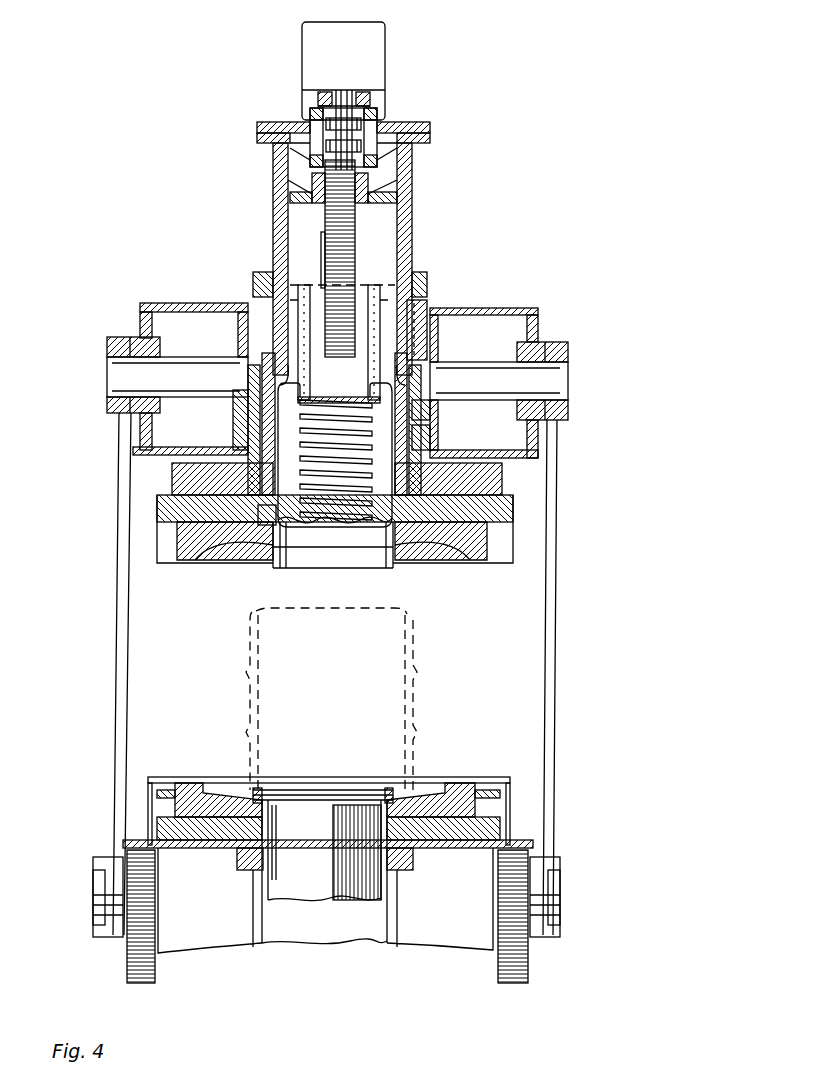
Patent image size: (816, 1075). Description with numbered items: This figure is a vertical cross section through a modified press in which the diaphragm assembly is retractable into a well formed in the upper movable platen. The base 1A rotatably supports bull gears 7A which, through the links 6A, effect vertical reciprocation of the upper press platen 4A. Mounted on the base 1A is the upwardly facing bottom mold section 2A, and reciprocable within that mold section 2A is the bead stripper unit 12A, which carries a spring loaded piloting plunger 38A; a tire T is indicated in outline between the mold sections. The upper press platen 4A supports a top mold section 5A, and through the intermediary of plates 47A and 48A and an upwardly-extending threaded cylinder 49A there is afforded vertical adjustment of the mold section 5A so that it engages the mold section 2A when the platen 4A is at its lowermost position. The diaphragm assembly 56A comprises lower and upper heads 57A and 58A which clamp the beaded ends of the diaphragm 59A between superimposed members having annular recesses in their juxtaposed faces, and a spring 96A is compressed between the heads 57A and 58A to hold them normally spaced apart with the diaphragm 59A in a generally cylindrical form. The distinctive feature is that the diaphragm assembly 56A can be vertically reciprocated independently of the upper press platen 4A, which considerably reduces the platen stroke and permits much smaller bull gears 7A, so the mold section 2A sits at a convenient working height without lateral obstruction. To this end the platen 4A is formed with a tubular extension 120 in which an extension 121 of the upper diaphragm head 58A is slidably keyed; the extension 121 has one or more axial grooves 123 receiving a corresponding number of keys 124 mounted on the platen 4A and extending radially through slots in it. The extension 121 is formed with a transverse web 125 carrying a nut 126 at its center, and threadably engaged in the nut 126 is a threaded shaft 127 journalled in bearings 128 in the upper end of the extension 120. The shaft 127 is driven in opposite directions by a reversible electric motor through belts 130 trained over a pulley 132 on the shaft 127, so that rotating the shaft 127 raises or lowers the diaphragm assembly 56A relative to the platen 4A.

The pulley 132 is at (347, 95).
The belts 130 is at (362, 102).
The bearings 128 is at (312, 156).
The transverse web 125 is at (388, 195).
The nut 126 is at (363, 222).
The threaded shaft 127 is at (326, 262).
The tubular extension 120 is at (412, 235).
The extension 121 is at (407, 265).
The axial grooves 123 is at (400, 313).
The keys 124 is at (418, 336).
The upper press platen 4A is at (540, 325).
The upper head 58A is at (245, 434).
The diaphragm 59A is at (440, 412).
The threaded cylinder 49A is at (440, 439).
The plate 48A is at (500, 480).
The plate 47A is at (515, 512).
The top mold section 5A is at (490, 562).
The spring 96A is at (265, 522).
The lower head 57A is at (303, 556).
The diaphragm assembly 56A is at (355, 556).
The links 6A is at (116, 684).
The container T is at (412, 712).
The spring loaded piloting plunger 38A is at (330, 792).
The bottom mold section 2A is at (470, 783).
The base 1A is at (520, 847).
The bead stripper unit 12A is at (357, 905).
The bull gears 7A is at (125, 958).